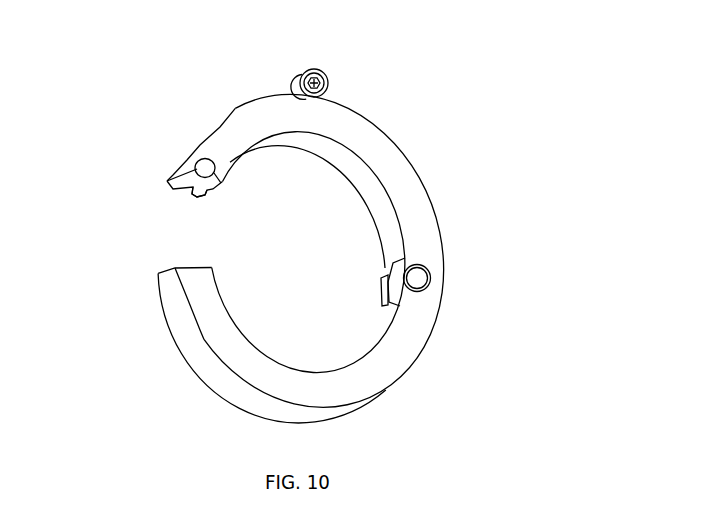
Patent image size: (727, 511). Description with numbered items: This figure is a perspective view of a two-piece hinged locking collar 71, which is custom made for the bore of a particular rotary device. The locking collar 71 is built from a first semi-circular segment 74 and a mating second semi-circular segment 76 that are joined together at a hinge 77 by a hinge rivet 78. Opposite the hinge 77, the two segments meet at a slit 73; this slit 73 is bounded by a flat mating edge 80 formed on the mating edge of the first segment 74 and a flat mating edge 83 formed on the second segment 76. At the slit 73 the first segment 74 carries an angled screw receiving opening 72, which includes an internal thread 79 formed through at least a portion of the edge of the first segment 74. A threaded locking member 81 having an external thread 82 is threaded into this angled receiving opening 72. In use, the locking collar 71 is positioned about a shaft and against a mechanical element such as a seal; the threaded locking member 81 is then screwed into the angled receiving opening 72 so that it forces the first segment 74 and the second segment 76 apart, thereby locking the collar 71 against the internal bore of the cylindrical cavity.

The two-piece locking collar 71 is at (337, 245).
The angled screw receiving opening 72 is at (212, 152).
The slit 73 is at (147, 217).
The first semi-circular segment 74 is at (495, 40).
The second semi-circular segment 76 is at (333, 390).
The hinge 77 is at (437, 277).
The hinge rivet 78 is at (417, 280).
The internal thread 79 is at (208, 172).
The flat mating edge 80 is at (207, 190).
The threaded locking member 81 is at (295, 67).
The external thread 82 is at (318, 75).
The flat mating edge 83 is at (193, 265).